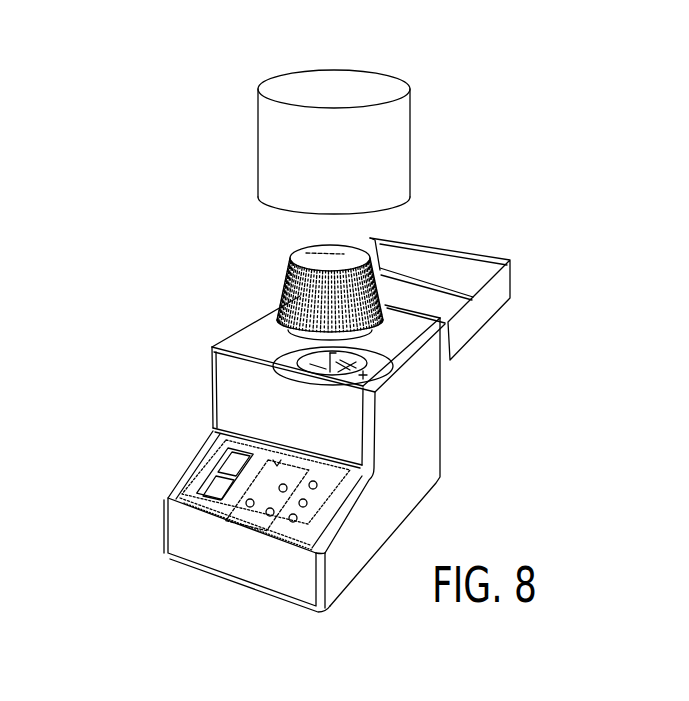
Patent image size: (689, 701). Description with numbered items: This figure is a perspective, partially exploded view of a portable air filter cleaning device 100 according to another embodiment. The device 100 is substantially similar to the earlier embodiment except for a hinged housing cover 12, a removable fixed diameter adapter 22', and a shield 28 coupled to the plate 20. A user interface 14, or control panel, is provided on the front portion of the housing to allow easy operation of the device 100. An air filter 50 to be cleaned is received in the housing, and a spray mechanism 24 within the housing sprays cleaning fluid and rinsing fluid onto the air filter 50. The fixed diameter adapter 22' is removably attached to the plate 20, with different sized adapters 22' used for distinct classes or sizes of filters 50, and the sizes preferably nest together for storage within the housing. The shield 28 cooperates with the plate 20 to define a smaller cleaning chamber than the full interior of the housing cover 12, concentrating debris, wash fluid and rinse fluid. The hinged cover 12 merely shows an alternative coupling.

The portable air filter cleaning device 100 is at (175, 250).
The housing cover 12 is at (441, 253).
The user interface 14 is at (196, 483).
The plate 20 is at (272, 358).
The fixed diameter adapter 22' is at (405, 371).
The spray mechanism 24 is at (296, 343).
The shield 28 is at (340, 68).
The air filter 50 is at (290, 275).